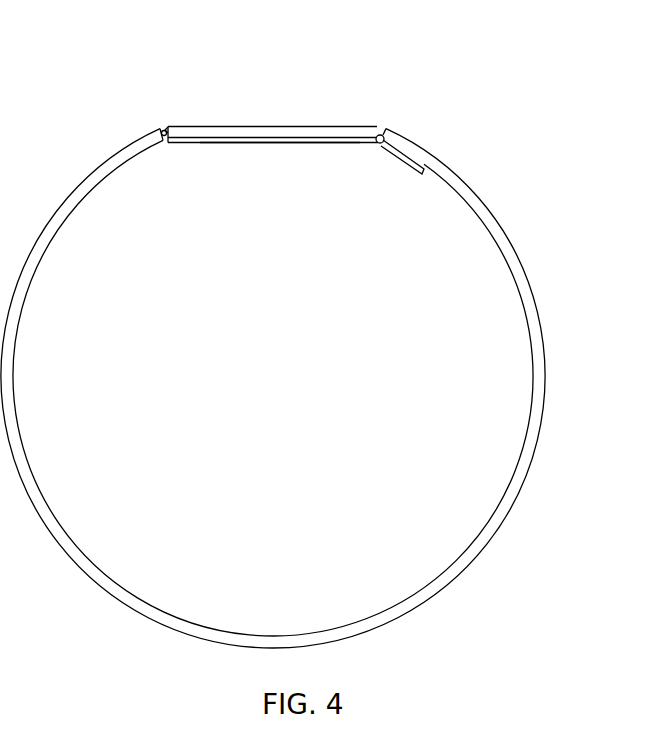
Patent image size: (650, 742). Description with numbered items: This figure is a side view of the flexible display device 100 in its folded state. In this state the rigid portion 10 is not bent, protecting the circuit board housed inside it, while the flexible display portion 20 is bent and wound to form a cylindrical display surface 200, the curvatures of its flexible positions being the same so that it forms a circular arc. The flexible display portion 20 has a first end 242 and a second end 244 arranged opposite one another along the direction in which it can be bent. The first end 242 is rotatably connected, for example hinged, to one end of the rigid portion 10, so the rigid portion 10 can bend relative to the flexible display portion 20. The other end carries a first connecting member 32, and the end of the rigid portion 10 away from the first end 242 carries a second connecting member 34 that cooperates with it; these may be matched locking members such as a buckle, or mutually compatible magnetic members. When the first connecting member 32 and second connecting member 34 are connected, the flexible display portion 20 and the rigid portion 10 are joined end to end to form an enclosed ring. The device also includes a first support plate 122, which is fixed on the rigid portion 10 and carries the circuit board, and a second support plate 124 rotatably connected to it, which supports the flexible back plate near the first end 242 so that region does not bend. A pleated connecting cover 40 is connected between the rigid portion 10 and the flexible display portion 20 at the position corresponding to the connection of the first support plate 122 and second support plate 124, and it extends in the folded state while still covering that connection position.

The flexible display device 100 is at (133, 76).
The cylindrical display surface 200 is at (528, 276).
The flexible display portion 20 is at (477, 214).
The second end 244 is at (132, 162).
The first end 242 is at (401, 147).
The rigid portion 10 is at (262, 133).
The first support plate 122 is at (305, 143).
The second support plate 124 is at (399, 151).
The pleated connecting cover 40 is at (374, 126).
The second connecting member 34 is at (168, 126).
The first connecting member 32 is at (162, 130).